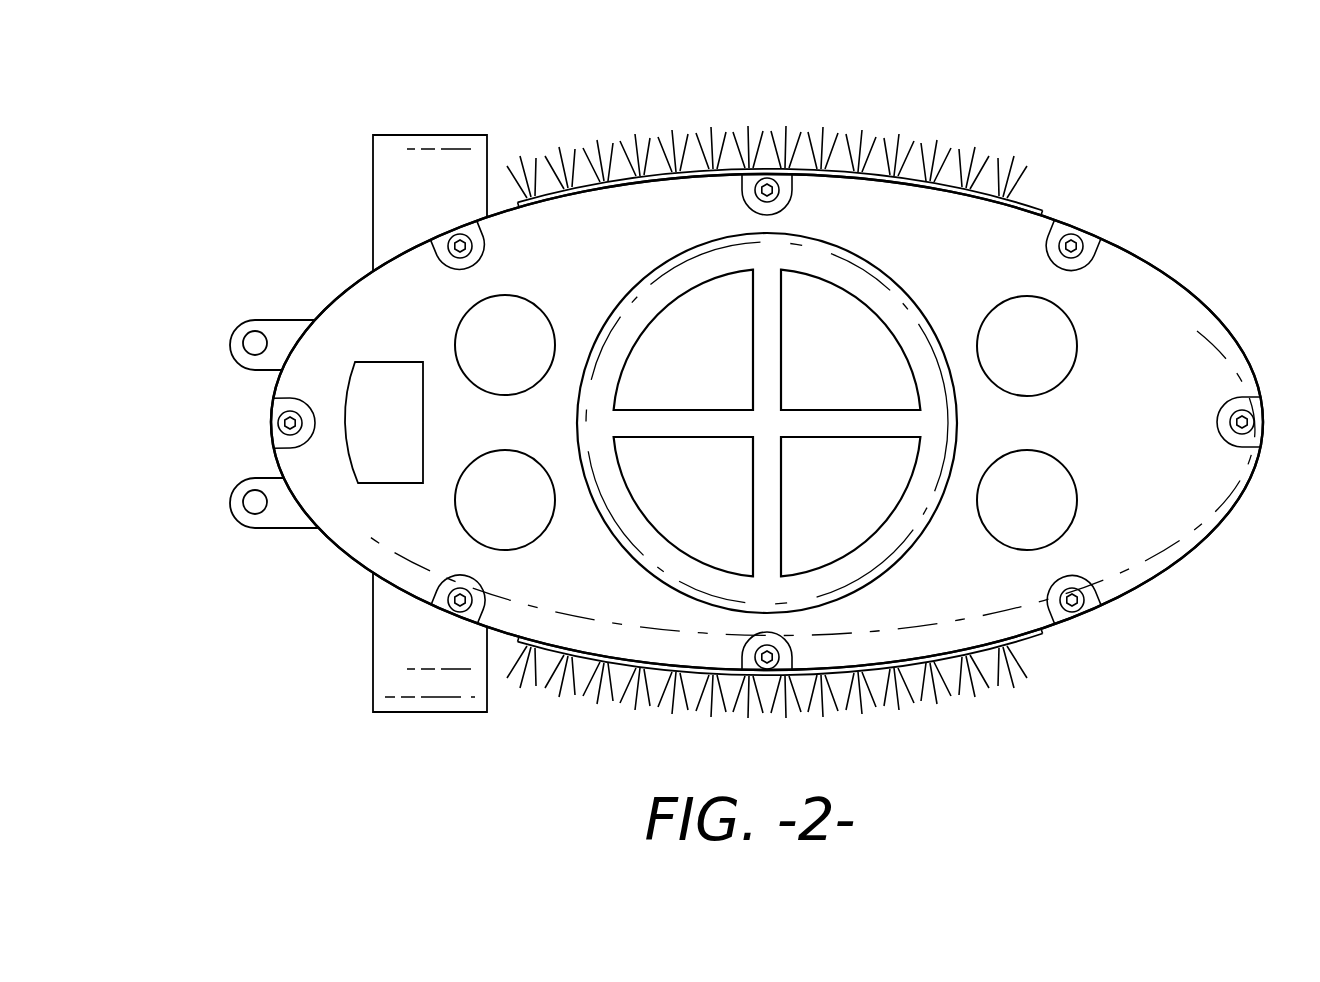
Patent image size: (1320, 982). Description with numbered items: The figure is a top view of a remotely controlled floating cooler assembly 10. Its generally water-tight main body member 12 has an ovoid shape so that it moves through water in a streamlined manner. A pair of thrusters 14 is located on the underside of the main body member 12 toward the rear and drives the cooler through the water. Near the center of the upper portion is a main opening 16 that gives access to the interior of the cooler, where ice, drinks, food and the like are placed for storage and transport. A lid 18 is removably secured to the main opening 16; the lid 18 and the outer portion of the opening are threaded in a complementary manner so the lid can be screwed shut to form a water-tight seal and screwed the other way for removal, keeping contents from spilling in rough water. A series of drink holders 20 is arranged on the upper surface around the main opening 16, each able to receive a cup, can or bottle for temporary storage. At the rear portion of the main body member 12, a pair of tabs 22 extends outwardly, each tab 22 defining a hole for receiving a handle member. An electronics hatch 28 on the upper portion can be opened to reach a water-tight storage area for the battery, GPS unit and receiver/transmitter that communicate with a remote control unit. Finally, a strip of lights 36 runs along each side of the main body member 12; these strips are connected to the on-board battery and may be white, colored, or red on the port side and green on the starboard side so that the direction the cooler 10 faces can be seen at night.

The remotely controlled floating cooler assembly 10 is at (1119, 201).
The main body member 12 is at (630, 202).
The thrusters 14 is at (420, 136).
The main opening 16 is at (883, 270).
The lid 18 is at (764, 250).
The drink holders 20 is at (511, 323).
The tabs 22 is at (268, 323).
The electronics hatch 28 is at (367, 375).
The strip of lights 36 is at (697, 172).